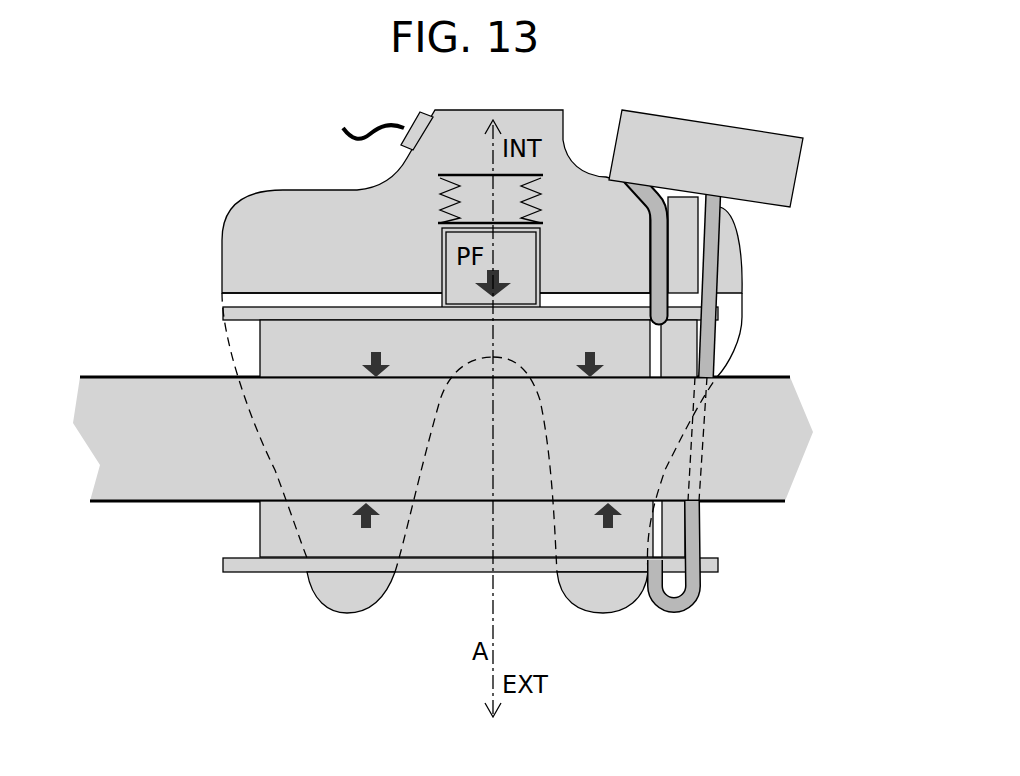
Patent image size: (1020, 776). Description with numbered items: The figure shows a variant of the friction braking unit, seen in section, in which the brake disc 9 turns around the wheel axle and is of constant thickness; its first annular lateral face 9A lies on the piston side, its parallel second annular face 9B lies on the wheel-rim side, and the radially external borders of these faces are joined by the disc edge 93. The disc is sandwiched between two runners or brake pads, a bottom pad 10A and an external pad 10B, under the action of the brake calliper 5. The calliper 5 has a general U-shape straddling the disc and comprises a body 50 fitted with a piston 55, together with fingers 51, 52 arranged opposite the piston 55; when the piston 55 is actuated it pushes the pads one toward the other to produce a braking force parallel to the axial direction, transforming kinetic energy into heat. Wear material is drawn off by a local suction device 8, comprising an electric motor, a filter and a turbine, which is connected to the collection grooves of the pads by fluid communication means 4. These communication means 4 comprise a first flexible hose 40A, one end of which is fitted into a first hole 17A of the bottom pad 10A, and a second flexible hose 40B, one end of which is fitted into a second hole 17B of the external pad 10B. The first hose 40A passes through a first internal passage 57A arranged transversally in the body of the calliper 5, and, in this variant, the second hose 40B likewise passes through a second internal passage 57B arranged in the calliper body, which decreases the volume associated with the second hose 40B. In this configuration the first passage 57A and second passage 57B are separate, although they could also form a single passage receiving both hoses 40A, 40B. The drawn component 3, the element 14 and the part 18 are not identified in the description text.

The electronic component 3 is at (658, 355).
The fluid communication means 4 is at (459, 556).
The brake calliper 5 is at (444, 188).
The suction device 8 is at (751, 133).
The brake disc 9 is at (457, 442).
The first annular lateral face 9A is at (183, 376).
The second annular lateral face 9B is at (168, 501).
The bottom pad 10A is at (204, 316).
The external pad 10B is at (204, 570).
The gap 14 is at (428, 307).
The first hole 17A is at (720, 345).
The second hole 17B is at (647, 600).
The mating board 18 is at (797, 178).
The first flexible hose 40A is at (647, 265).
The second flexible hose 40B is at (713, 300).
The calliper body 50 is at (327, 190).
The finger 51 is at (365, 602).
The finger 52 is at (592, 600).
The piston 55 is at (530, 181).
The first internal passage 57A is at (672, 250).
The second internal passage 57B is at (720, 233).
The disc edge 93 is at (92, 431).